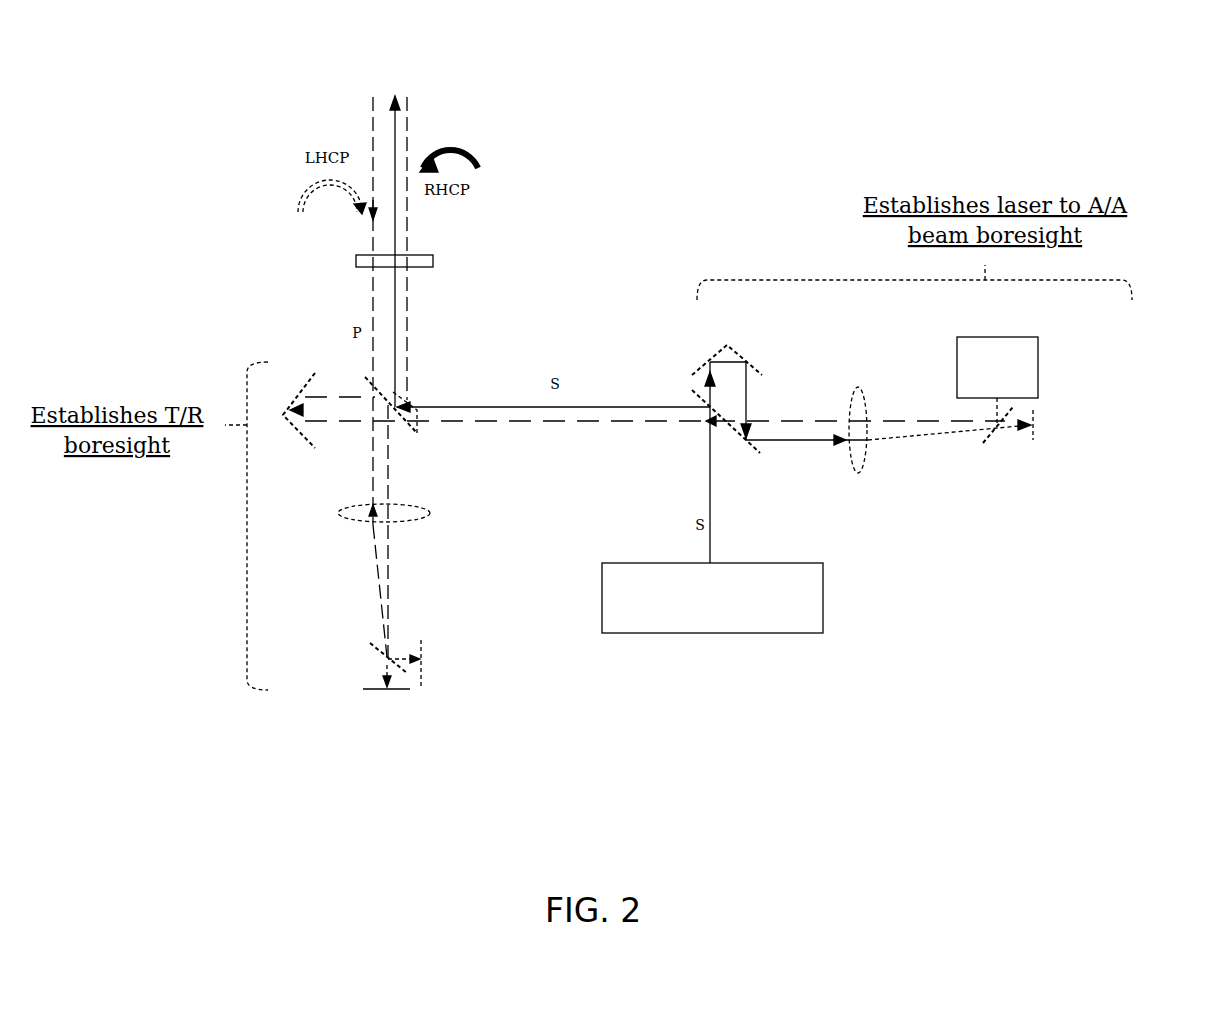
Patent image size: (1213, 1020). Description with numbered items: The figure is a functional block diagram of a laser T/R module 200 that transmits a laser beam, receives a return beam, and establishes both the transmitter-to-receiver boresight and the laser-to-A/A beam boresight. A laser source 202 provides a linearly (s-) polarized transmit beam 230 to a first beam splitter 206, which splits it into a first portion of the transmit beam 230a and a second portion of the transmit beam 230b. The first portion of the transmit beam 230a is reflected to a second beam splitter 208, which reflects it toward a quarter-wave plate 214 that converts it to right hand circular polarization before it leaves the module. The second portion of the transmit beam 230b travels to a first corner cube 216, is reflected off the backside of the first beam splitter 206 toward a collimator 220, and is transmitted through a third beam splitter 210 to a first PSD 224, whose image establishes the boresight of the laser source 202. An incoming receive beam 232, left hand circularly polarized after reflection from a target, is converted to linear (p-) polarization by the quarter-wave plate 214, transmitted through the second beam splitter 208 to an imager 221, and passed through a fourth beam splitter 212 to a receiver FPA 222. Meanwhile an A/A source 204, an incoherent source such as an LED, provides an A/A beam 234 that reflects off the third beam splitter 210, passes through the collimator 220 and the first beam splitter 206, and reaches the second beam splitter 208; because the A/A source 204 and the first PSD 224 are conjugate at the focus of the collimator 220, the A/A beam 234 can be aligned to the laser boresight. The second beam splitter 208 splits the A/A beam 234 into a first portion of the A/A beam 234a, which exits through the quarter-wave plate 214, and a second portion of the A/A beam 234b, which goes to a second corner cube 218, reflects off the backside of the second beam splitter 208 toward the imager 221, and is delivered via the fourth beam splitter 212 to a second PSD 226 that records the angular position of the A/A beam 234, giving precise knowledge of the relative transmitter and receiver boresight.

The laser T/R module 200 is at (982, 70).
The laser source 202 is at (712, 598).
The A/A source 204 is at (997, 366).
The first beam splitter 206 is at (739, 435).
The second beam splitter 208 is at (402, 420).
The third beam splitter 210 is at (994, 438).
The fourth beam splitter 212 is at (367, 651).
The quarter-wave plate 214 is at (421, 261).
The first corner cube 216 is at (727, 346).
The second corner cube 218 is at (290, 416).
The collimator 220 is at (857, 413).
The imager 221 is at (407, 513).
The receiver FPA 222 is at (386, 696).
The first PSD 224 is at (1061, 425).
The second PSD 226 is at (428, 664).
The transmit beam 230 is at (700, 501).
The first portion of the transmit beam 230a is at (655, 405).
The second portion of the transmit beam 230b is at (808, 443).
The receive beam 232 is at (370, 125).
The A/A beam 234 is at (571, 424).
The first portion of the A/A beam 234a is at (410, 335).
The second portion of the A/A beam 234b is at (392, 612).